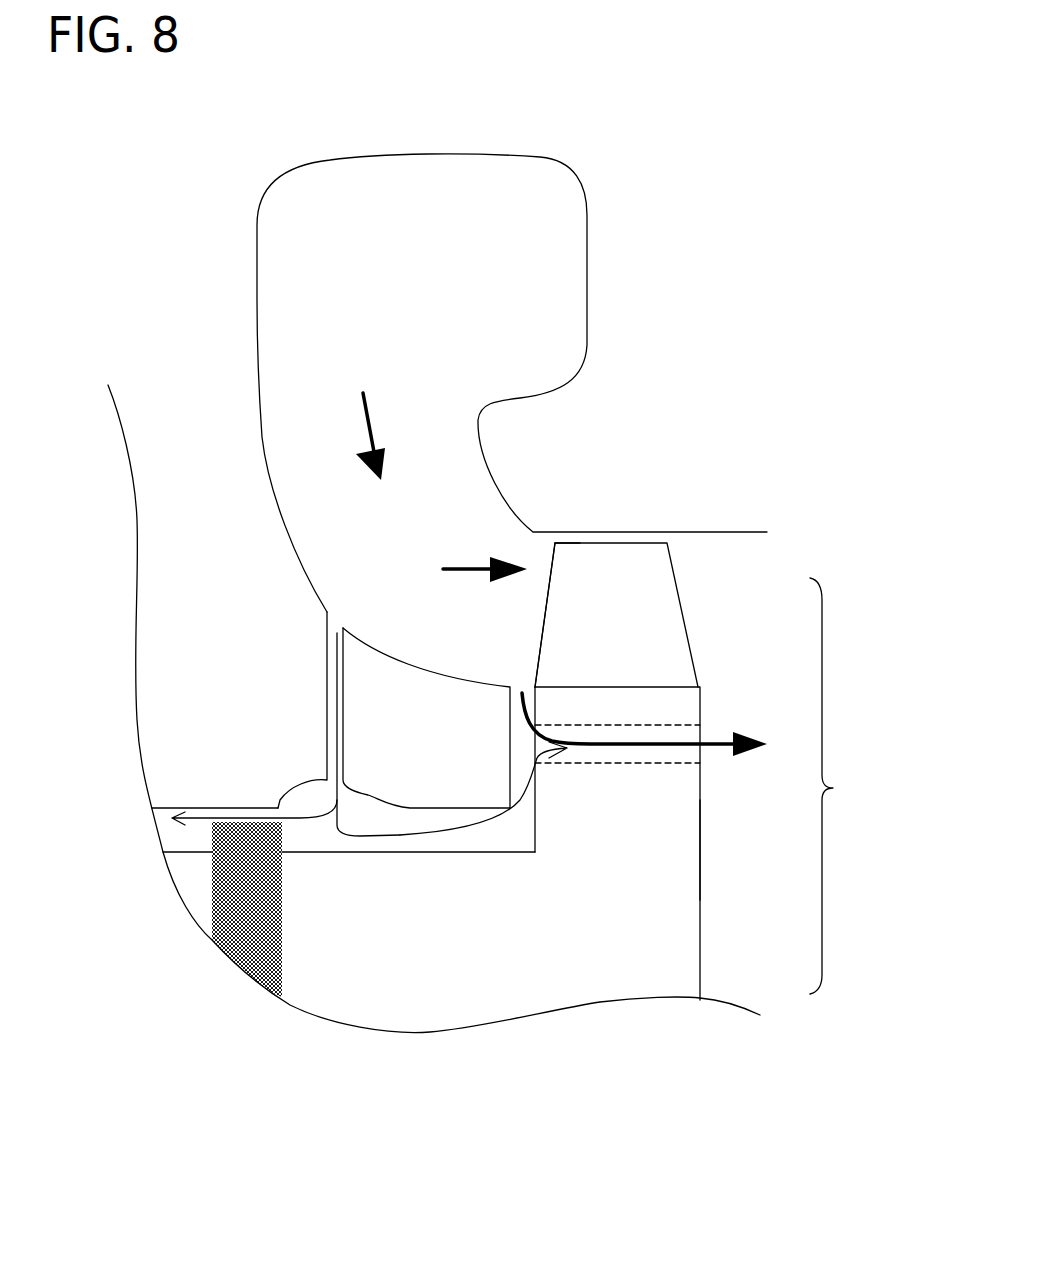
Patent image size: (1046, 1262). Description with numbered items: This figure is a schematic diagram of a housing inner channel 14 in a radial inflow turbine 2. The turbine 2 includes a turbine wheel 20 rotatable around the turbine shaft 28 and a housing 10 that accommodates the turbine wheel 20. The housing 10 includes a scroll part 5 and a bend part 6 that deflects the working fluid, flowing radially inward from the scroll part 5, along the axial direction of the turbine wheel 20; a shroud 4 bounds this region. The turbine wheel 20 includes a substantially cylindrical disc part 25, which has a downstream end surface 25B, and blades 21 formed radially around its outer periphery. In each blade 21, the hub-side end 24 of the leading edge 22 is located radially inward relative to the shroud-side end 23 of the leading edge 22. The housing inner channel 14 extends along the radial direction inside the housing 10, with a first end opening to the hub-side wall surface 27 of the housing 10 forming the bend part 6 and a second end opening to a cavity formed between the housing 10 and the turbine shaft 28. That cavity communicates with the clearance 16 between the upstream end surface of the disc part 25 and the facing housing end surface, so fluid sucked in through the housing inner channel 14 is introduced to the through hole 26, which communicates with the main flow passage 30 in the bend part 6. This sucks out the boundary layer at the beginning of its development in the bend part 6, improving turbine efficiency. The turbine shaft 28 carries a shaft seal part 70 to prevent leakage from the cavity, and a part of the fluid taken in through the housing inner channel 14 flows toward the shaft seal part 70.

The radial inflow turbine 2 is at (705, 184).
The shroud 4 is at (650, 498).
The scroll part 5 is at (498, 228).
The bend part 6 is at (447, 680).
The housing 10 is at (253, 700).
The housing inner channel 14 is at (327, 678).
The clearance 16 is at (518, 757).
The turbine wheel 20 is at (701, 736).
The blade 21 is at (672, 632).
The leading edge 22 is at (548, 590).
The shroud-side end 23 is at (553, 545).
The hub-side end 24 is at (522, 684).
The disc part 25 is at (668, 942).
The downstream end surface 25B is at (700, 828).
The through hole 26 is at (688, 753).
The hub-side wall surface 27 is at (503, 680).
The turbine shaft 28 is at (418, 980).
The main flow passage 30 is at (460, 565).
The shaft seal part 70 is at (255, 940).